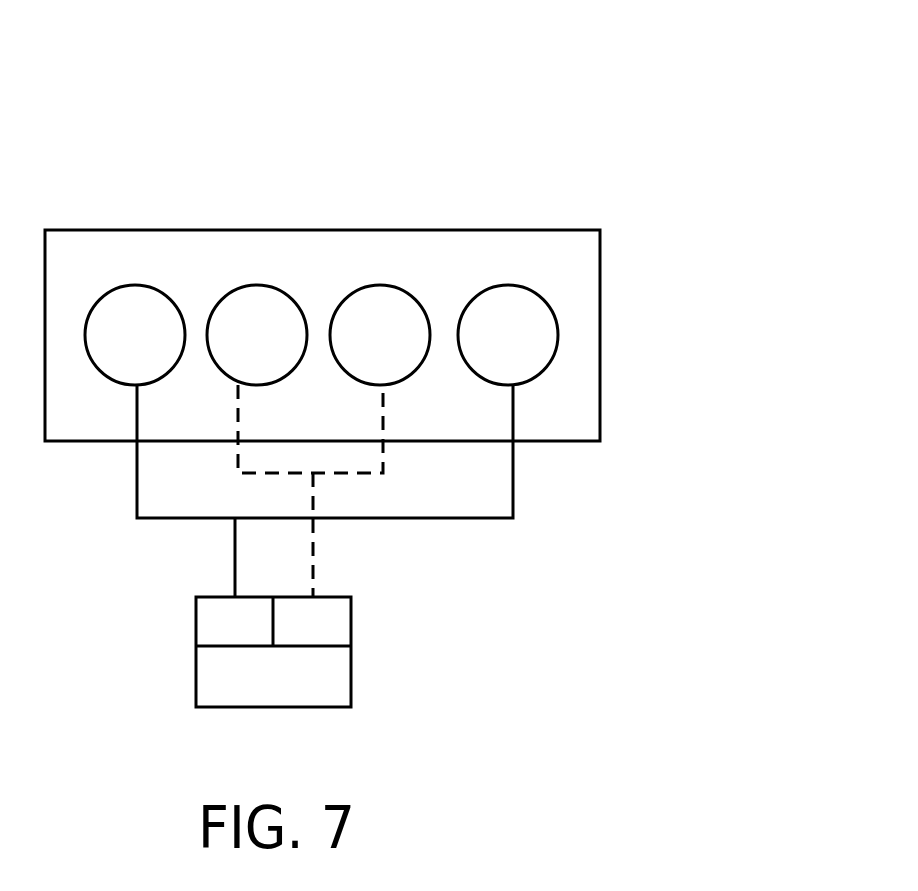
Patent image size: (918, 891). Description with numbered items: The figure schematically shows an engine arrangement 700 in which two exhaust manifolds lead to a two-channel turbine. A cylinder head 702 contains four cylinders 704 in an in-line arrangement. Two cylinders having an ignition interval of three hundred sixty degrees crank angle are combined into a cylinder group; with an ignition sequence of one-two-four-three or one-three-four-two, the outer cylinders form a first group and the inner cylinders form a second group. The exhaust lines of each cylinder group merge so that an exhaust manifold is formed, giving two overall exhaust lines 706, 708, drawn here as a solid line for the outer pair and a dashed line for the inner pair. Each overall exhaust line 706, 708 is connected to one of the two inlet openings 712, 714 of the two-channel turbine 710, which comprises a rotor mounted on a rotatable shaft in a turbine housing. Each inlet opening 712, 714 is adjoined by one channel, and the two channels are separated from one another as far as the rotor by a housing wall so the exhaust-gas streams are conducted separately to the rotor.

The system 700 is at (639, 58).
The cylinder head 702 is at (502, 230).
The cylinder 704 is at (140, 284).
The overall exhaust line 706 is at (513, 495).
The overall exhaust line 708 is at (313, 568).
The two-channel turbine 710 is at (362, 652).
The inlet opening 712 is at (244, 621).
The inlet opening 714 is at (312, 623).